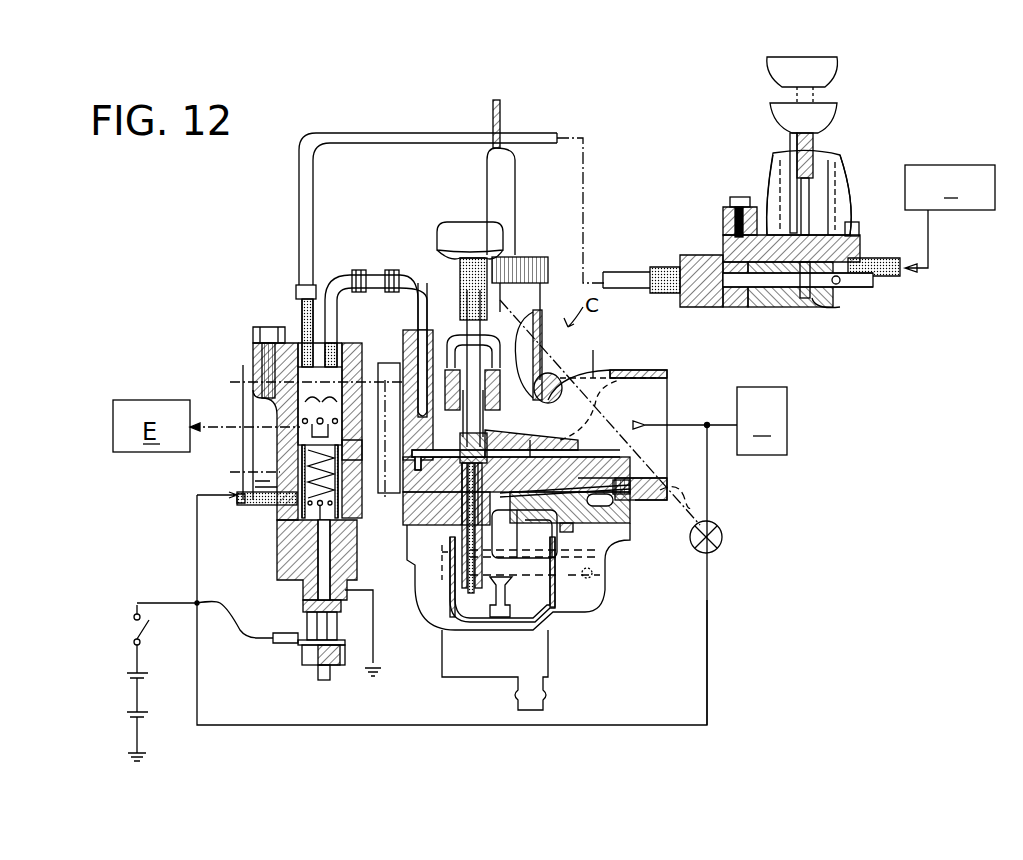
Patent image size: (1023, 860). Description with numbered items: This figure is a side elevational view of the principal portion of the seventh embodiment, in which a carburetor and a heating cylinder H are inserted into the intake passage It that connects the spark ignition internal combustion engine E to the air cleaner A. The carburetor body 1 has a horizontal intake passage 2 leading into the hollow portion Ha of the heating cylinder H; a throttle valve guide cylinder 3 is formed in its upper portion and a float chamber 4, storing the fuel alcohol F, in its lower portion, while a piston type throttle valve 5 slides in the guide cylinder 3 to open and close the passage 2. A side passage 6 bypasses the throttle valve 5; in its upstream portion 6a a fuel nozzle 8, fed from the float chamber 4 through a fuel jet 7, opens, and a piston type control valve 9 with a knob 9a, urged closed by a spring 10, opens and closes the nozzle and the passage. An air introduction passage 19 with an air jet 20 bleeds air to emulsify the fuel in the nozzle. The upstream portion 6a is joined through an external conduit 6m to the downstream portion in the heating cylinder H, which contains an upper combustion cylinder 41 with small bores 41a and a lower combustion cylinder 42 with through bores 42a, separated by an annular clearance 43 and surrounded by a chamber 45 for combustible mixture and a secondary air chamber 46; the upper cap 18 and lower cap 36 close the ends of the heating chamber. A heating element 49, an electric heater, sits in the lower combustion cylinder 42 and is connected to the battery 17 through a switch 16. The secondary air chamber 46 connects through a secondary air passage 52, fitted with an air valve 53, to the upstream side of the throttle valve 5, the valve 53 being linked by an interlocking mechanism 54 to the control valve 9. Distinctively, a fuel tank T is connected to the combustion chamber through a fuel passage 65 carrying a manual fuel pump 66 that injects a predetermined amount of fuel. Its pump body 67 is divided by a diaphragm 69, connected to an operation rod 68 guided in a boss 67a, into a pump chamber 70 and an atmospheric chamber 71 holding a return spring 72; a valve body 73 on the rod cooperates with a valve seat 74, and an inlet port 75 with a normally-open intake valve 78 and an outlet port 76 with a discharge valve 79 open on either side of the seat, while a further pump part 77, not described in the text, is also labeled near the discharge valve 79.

The carburetor body 1 is at (594, 352).
The intake passage 2 is at (640, 407).
The throttle valve guide cylinder 3 is at (525, 301).
The float chamber 4 is at (565, 582).
The throttle valve 5 is at (542, 358).
The side passage 6 is at (533, 455).
The upstream portion of side passage 6a is at (578, 446).
The conduit 6m is at (383, 282).
The fuel jet 7 is at (462, 592).
The fuel nozzle 8 is at (478, 481).
The control valve 9 is at (455, 432).
The knob 9a is at (452, 255).
The spring 10 is at (487, 407).
The switch 16 is at (142, 628).
The battery 17 is at (145, 695).
The upper cap 18 is at (348, 345).
The air introduction passage 19 is at (565, 508).
The air jet 20 is at (628, 497).
The lower cap 36 is at (300, 588).
The upper combustion cylinder 41 is at (381, 428).
The small bores 41a is at (320, 406).
The lower combustion cylinder 42 is at (332, 544).
The through bores 42a is at (282, 512).
The annular clearance 43 is at (298, 441).
The annular chamber for combustible gaseous mixture 45 is at (372, 440).
The secondary air chamber 46 is at (278, 472).
The heating element 49 is at (308, 457).
The secondary air passage 52 is at (707, 618).
The air valve 53 is at (722, 539).
The interlocking mechanism 54 is at (679, 488).
The fuel passage 65 is at (557, 135).
The manual fuel pump 66 is at (856, 149).
The pump body 67 is at (855, 215).
The boss 67a is at (792, 148).
The operation rod 68 is at (815, 148).
The diaphragm 69 is at (835, 214).
The pump chamber 70 is at (852, 234).
The atmospheric chamber 71 is at (838, 170).
The return spring 72 is at (775, 172).
The valve body 73 is at (815, 283).
The valve seat 74 is at (790, 248).
The inlet port 75 is at (848, 248).
The outlet port 76 is at (810, 290).
The valve ball 77 is at (830, 307).
The intake valve 78 is at (840, 285).
The discharge valve 79 is at (790, 292).
The air cleaner A is at (710, 421).
The fuel alcohol F is at (535, 563).
The heating cylinder H is at (247, 372).
The hollow portion Ha is at (236, 395).
The intake passage It is at (220, 425).
The fuel tank T is at (950, 218).